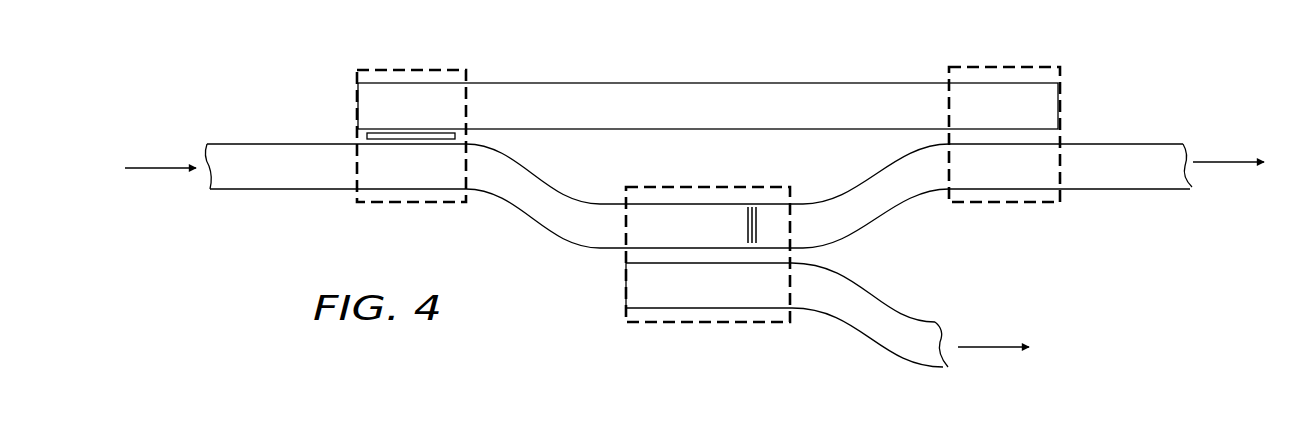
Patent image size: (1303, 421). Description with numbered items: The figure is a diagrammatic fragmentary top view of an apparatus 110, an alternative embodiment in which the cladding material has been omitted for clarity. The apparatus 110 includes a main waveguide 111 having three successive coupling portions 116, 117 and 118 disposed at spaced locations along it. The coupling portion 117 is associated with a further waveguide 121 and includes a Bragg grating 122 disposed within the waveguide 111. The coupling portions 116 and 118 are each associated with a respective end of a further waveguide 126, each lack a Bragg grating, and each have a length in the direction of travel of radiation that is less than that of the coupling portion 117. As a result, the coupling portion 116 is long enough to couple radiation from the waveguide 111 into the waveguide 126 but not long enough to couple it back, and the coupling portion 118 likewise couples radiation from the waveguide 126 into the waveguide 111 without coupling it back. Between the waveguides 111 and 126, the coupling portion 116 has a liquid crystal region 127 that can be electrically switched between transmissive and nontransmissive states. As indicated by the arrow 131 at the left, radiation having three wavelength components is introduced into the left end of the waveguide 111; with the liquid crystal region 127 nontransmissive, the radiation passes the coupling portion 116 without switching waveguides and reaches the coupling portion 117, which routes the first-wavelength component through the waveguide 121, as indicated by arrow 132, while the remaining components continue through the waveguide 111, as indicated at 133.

The apparatus 110 is at (558, 317).
The main waveguide 111 is at (1150, 189).
The coupling portion 116 is at (402, 203).
The coupling portion 117 is at (708, 187).
The coupling portion 118 is at (1014, 203).
The further waveguide 121 is at (886, 308).
The Bragg grating 122 is at (744, 224).
The further waveguide 126 is at (609, 85).
The liquid crystal region 127 is at (404, 134).
The arrow 131 is at (162, 171).
The arrow 132 is at (995, 346).
The arrow 133 is at (1228, 163).